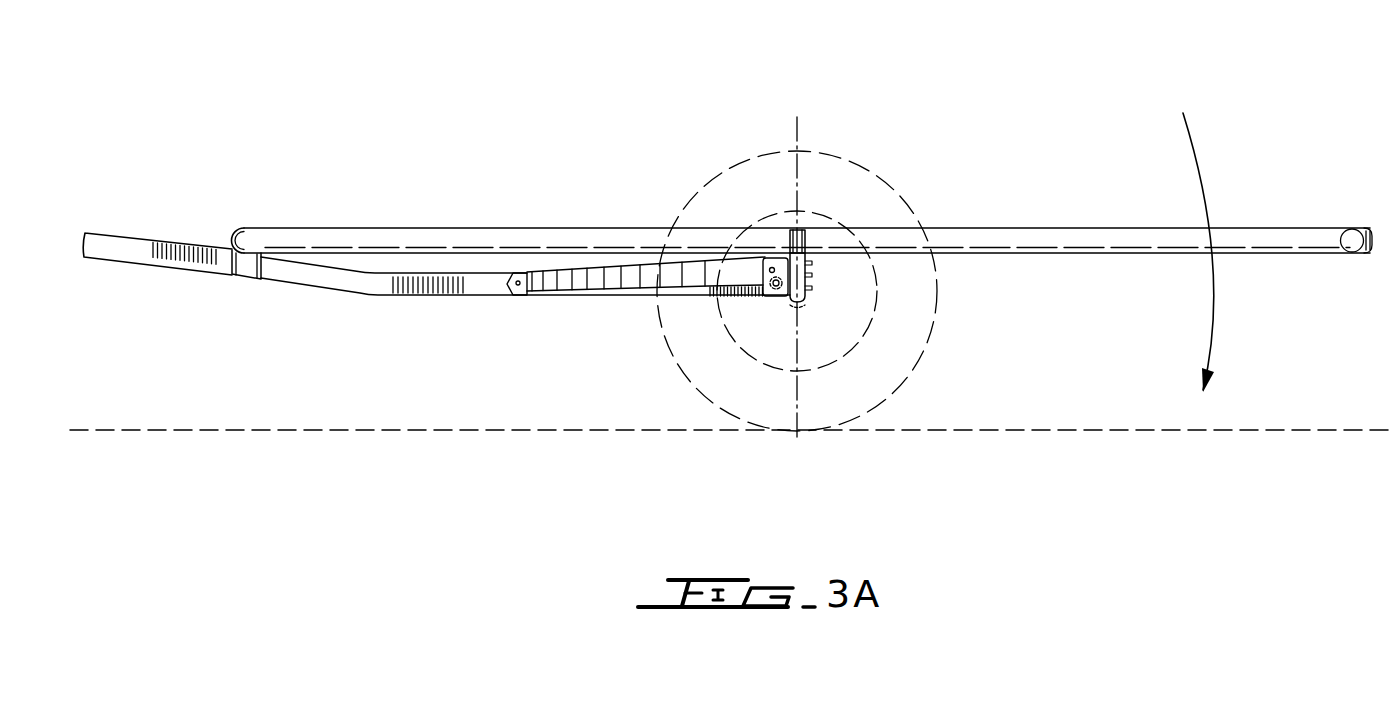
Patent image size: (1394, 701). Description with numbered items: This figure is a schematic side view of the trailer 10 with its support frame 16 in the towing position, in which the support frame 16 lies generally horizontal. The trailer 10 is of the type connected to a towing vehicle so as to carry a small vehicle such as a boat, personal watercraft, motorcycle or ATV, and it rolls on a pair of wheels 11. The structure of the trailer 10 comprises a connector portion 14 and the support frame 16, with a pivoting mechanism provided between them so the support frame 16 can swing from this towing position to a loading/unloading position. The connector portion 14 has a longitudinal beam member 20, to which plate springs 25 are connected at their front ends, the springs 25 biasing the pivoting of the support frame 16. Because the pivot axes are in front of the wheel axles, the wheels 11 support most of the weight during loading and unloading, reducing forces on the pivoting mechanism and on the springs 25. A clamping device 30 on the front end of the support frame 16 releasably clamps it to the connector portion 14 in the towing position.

The trailer 10 is at (892, 108).
The wheels 11 is at (918, 358).
The connector portion 14 is at (333, 309).
The support frame 16 is at (545, 209).
The longitudinal beam member 20 is at (390, 283).
The springs 25 is at (597, 283).
The clamping device 30 is at (245, 270).